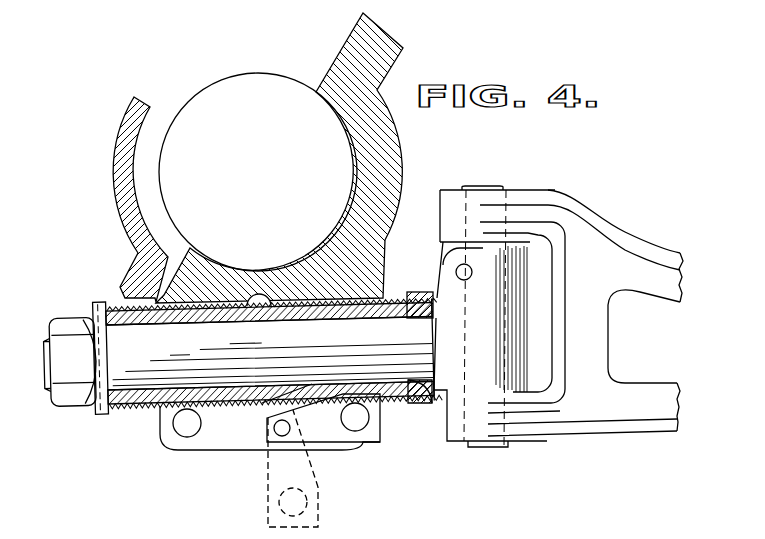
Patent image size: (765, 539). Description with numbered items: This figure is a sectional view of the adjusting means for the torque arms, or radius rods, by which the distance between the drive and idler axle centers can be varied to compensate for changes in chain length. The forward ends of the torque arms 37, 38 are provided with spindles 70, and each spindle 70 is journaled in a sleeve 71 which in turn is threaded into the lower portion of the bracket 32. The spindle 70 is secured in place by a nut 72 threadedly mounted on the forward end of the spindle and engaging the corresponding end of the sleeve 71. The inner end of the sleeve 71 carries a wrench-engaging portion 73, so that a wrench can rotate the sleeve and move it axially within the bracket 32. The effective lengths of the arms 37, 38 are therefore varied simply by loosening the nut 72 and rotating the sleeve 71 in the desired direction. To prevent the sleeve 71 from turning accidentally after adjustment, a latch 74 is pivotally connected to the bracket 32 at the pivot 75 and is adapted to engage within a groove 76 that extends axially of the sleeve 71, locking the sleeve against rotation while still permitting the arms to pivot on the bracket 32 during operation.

The bracket 32 is at (393, 140).
The torque arm 37 is at (562, 428).
The torque arm 38 is at (584, 448).
The spindle 70 is at (403, 364).
The sleeve 71 is at (130, 407).
The nut 72 is at (67, 398).
The wrench-engaging portion 73 is at (432, 397).
The latch 74 is at (337, 432).
The pivot of latch 75 is at (282, 436).
The groove 76 is at (318, 396).